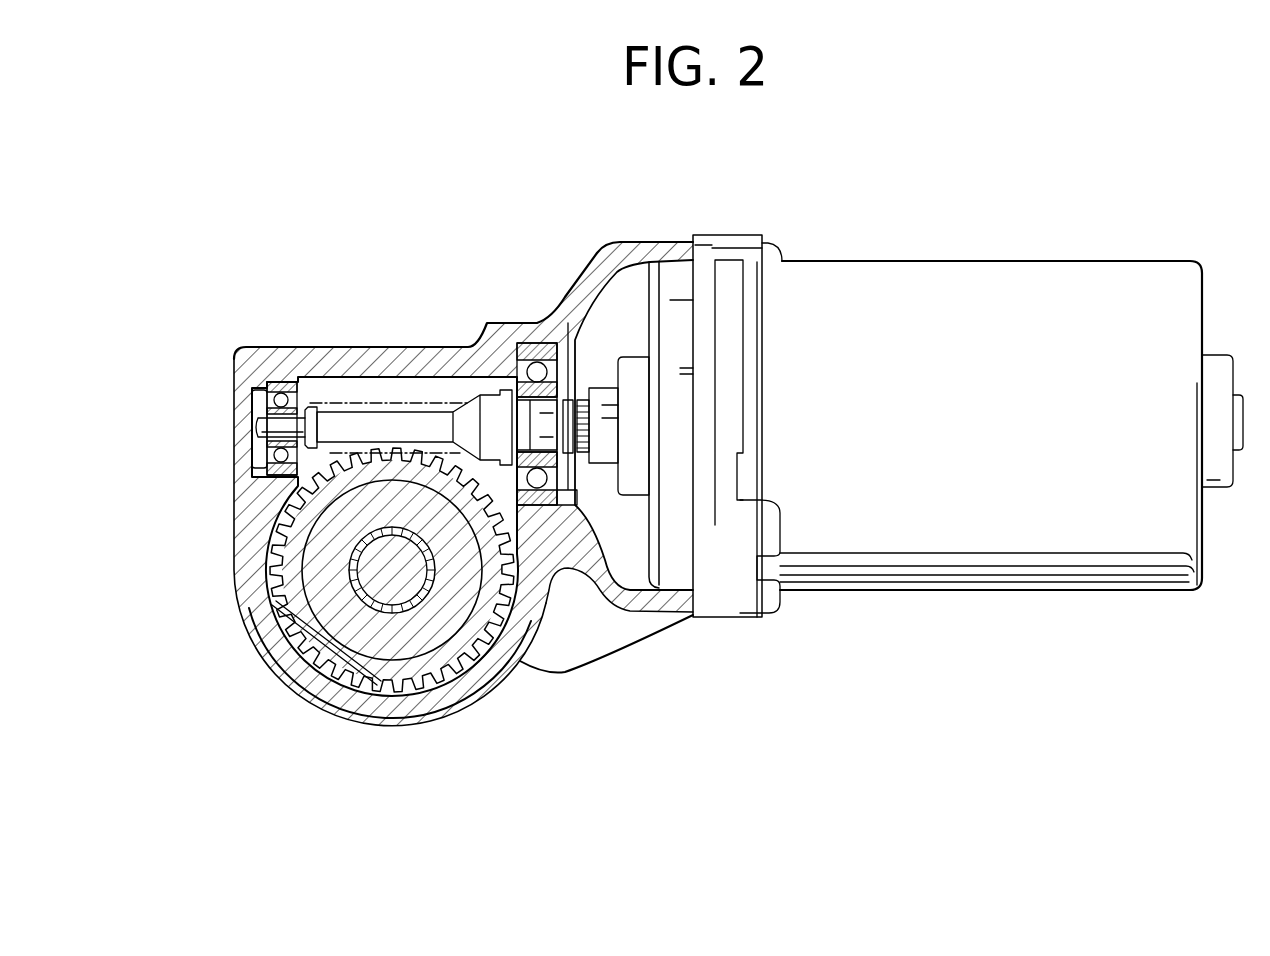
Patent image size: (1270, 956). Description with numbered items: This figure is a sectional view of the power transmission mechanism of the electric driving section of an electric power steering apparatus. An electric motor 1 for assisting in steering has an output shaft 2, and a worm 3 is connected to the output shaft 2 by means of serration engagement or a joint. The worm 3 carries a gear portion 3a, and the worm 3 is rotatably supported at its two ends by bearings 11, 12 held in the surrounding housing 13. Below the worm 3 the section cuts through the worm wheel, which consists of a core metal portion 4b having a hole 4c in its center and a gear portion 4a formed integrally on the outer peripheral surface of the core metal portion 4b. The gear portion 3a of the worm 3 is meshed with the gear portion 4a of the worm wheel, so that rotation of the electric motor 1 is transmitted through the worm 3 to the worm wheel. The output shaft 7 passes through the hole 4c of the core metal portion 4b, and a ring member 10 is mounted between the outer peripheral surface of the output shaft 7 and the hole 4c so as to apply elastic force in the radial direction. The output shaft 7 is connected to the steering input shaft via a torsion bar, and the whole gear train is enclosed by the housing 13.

The electric motor 1 is at (1058, 272).
The output shaft 2 is at (608, 385).
The worm 3 is at (395, 432).
The gear portion 3a is at (336, 410).
The gear portion 4a is at (478, 655).
The core metal portion 4b is at (413, 643).
The hole 4c is at (370, 615).
The output shaft 7 is at (366, 573).
The ring member 10 is at (264, 650).
The bearing 11 is at (536, 350).
The bearing 12 is at (280, 381).
The housing 13 is at (308, 692).